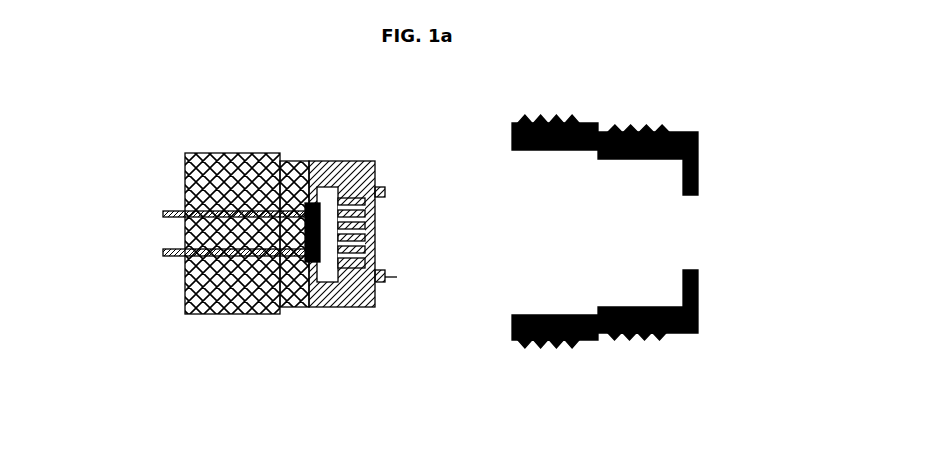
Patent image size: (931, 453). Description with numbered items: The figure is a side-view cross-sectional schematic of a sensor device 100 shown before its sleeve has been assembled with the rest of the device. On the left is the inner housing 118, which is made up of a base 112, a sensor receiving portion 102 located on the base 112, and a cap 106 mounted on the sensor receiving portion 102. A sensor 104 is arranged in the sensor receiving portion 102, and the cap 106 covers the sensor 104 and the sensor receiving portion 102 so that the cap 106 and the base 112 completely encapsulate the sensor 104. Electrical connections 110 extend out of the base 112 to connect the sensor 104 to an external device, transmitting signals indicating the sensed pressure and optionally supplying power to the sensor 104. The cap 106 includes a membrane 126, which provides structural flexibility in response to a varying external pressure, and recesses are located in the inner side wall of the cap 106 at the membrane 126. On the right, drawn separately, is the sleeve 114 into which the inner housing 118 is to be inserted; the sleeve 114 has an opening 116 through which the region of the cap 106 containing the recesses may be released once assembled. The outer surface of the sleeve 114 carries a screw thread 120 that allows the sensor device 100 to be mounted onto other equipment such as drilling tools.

The sensor device 100 is at (402, 91).
The sensor receiving portion 102 is at (302, 307).
The sensor 104 is at (308, 203).
The cap 106 is at (363, 307).
The electrical connections 110 is at (163, 214).
The base 112 is at (192, 315).
The sleeve 114 is at (698, 310).
The opening 116 is at (686, 237).
The inner housing 118 is at (188, 370).
The screw thread 120 is at (613, 340).
The membrane 126 is at (385, 193).